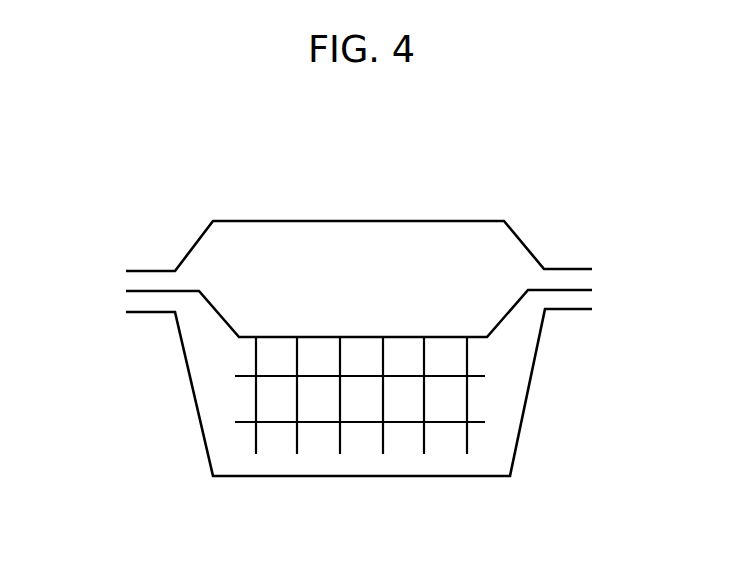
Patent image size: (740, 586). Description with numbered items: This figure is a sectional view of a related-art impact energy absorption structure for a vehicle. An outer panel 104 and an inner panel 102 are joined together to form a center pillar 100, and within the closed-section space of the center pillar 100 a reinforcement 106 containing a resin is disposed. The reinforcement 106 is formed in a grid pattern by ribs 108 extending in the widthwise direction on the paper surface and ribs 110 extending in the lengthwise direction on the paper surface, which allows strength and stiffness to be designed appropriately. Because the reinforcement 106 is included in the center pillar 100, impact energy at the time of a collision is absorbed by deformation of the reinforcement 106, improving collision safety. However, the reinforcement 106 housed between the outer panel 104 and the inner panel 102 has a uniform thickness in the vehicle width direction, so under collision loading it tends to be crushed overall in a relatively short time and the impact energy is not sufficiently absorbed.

The center pillar 100 is at (379, 191).
The inner panel 102 is at (203, 236).
The outer panel 104 is at (190, 377).
The reinforcement 106 is at (148, 291).
The ribs extending in widthwise direction 108 is at (476, 380).
The ribs extending in lengthwise direction 110 is at (467, 440).